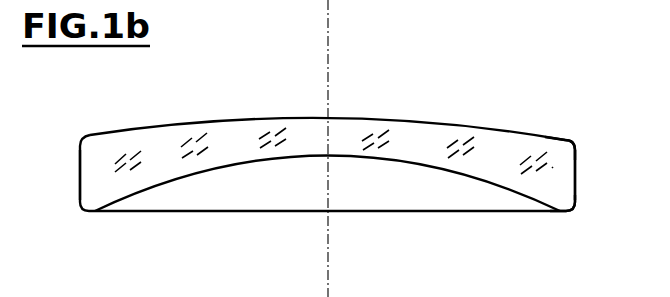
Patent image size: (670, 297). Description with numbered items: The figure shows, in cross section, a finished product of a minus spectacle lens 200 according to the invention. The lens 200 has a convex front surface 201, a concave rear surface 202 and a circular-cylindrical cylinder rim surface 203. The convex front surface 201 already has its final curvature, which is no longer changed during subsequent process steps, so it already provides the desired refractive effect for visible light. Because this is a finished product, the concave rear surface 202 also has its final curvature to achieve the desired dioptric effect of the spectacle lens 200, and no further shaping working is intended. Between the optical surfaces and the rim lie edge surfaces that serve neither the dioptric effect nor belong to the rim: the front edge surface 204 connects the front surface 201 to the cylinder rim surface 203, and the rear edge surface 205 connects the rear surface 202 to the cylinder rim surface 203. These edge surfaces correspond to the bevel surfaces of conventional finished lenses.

The finished product of a minus spectacle lens 200 is at (484, 97).
The convex front surface 201 is at (368, 117).
The concave rear surface 202 is at (242, 164).
The cylinder rim surface 203 is at (79, 178).
The front edge surface 204 is at (574, 141).
The rear edge surface 205 is at (574, 211).